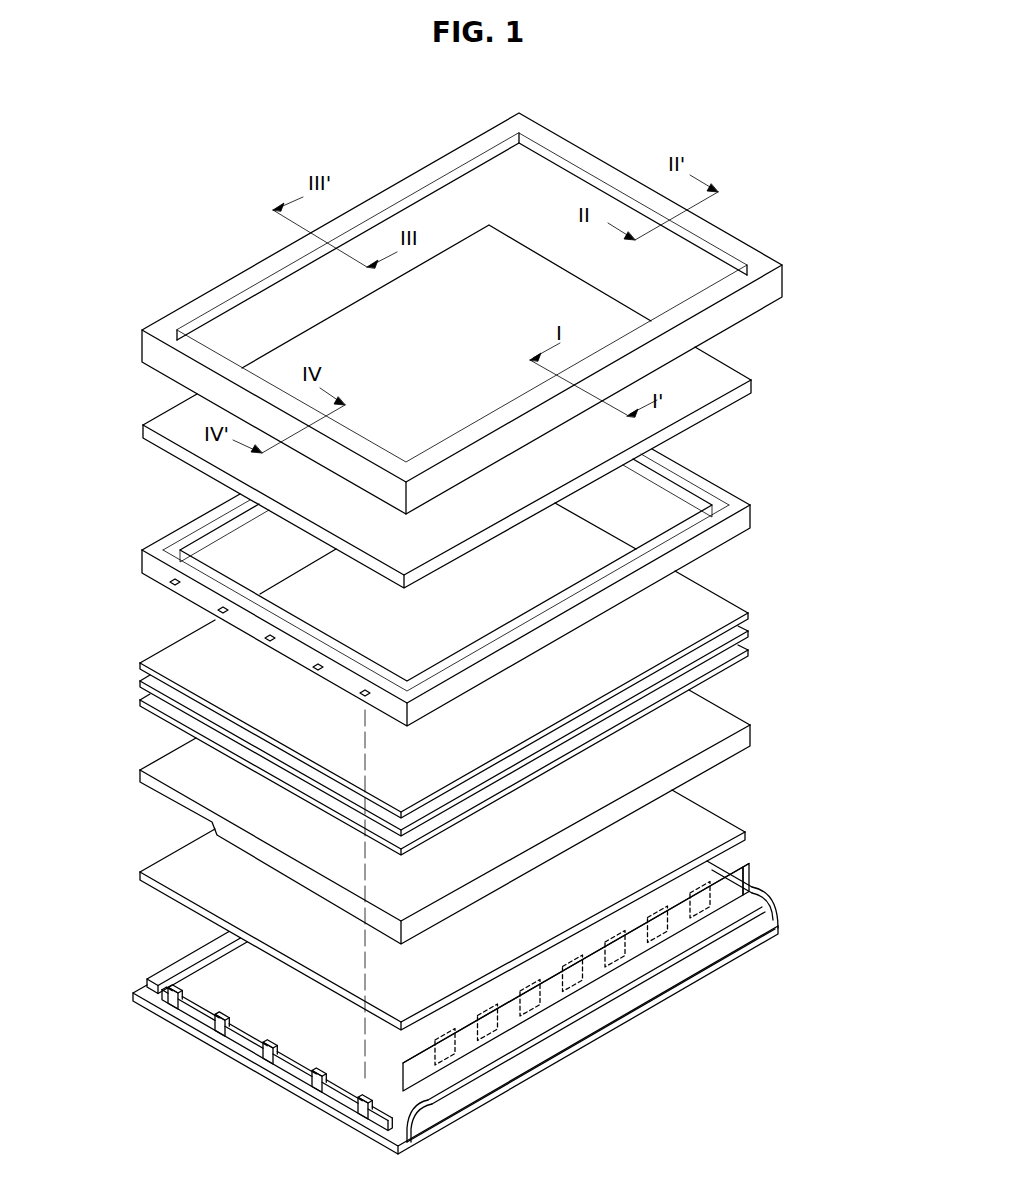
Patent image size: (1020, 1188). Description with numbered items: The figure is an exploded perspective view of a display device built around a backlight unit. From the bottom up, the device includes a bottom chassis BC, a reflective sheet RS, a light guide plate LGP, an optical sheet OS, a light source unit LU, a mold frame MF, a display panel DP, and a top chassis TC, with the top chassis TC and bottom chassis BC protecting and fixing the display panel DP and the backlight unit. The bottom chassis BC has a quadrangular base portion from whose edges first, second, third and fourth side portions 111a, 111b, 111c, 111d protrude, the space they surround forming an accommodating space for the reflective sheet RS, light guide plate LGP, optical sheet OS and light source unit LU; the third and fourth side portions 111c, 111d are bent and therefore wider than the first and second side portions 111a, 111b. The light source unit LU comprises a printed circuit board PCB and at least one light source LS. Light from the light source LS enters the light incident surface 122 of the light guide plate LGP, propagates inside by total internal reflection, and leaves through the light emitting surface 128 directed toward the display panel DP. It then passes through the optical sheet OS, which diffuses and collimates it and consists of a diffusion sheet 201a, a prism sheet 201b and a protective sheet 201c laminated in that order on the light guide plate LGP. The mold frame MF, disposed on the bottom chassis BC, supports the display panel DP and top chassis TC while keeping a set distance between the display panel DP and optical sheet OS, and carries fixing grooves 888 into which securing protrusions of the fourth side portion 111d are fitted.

The top chassis TC is at (766, 291).
The display panel DP is at (722, 377).
The mold frame MF is at (450, 587).
The fixing groove 888 is at (167, 590).
The optical sheet OS is at (517, 679).
The protective sheet 201c is at (747, 613).
The prism sheet 201b is at (747, 631).
The diffusion sheet 201a is at (747, 652).
The light guide plate LGP is at (500, 817).
The light emitting surface 128 is at (697, 718).
The light incident surface 122 is at (722, 752).
The reflective sheet RS is at (718, 832).
The bottom chassis BC is at (454, 1014).
The first side portion 111a is at (633, 985).
The second side portion 111b is at (765, 895).
The third side portion 111c is at (165, 975).
The fourth side portion 111d is at (345, 1105).
The light source unit LU is at (576, 1007).
The printed circuit board PCB is at (515, 1022).
The light source LS is at (485, 1040).